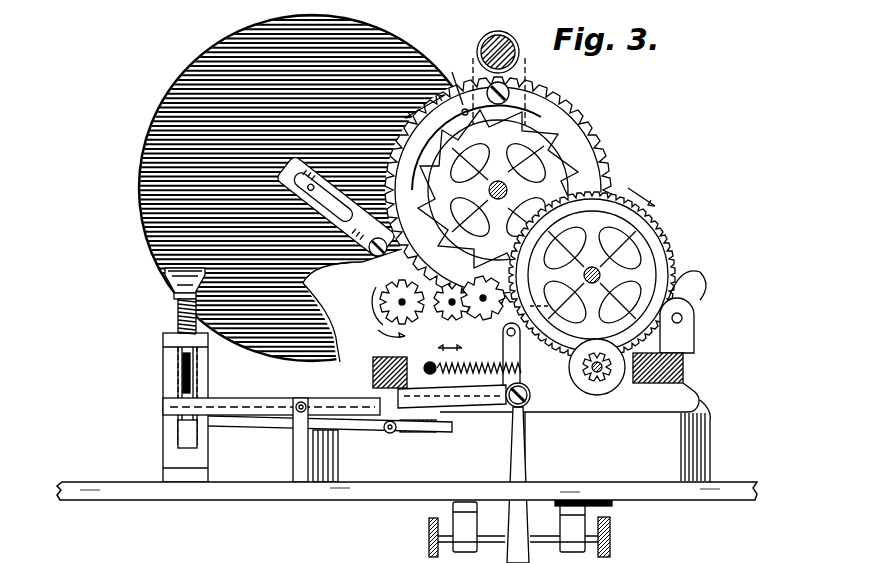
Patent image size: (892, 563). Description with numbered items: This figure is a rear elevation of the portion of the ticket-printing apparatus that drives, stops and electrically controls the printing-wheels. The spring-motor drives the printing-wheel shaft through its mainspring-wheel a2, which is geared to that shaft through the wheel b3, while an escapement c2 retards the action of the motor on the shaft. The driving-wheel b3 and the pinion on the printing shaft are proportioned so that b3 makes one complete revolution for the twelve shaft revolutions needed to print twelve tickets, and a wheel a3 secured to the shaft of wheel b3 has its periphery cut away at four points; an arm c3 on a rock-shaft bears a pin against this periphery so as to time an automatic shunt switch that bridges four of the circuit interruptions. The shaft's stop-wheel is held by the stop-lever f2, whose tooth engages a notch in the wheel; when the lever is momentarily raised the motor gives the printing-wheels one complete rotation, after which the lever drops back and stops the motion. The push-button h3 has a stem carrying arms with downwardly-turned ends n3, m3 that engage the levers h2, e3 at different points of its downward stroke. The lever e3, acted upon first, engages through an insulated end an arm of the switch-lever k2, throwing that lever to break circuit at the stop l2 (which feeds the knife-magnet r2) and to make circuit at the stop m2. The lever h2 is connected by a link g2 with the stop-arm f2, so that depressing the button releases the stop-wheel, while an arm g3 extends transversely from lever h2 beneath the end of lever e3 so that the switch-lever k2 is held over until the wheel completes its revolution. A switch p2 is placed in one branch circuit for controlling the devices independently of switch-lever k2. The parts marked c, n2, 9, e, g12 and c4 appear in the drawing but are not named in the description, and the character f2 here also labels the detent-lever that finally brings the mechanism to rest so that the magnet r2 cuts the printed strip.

The dial disk c is at (150, 151).
The escapement c2 is at (386, 314).
The arm n2 is at (336, 207).
The mainspring-wheel a2 is at (604, 166).
The knob 9 is at (513, 48).
The switch p2 is at (452, 84).
The wheel b3 is at (660, 242).
The stop-lever f2 is at (621, 298).
The arm c3 is at (550, 308).
The spoke e is at (600, 209).
The wheel a3 is at (688, 281).
The magnet r2 is at (604, 374).
The pinions g12 is at (438, 314).
The pawl c4 is at (396, 271).
The link g2 is at (521, 352).
The arm g3 is at (420, 433).
The lever h2 is at (455, 440).
The downwardly-turned end m3 is at (190, 395).
The downwardly-turned end n3 is at (193, 379).
The lever e3 is at (312, 401).
The push-button h3 is at (205, 290).
The stop l2 is at (628, 534).
The stop m2 is at (428, 532).
The switch-lever k2 is at (523, 475).